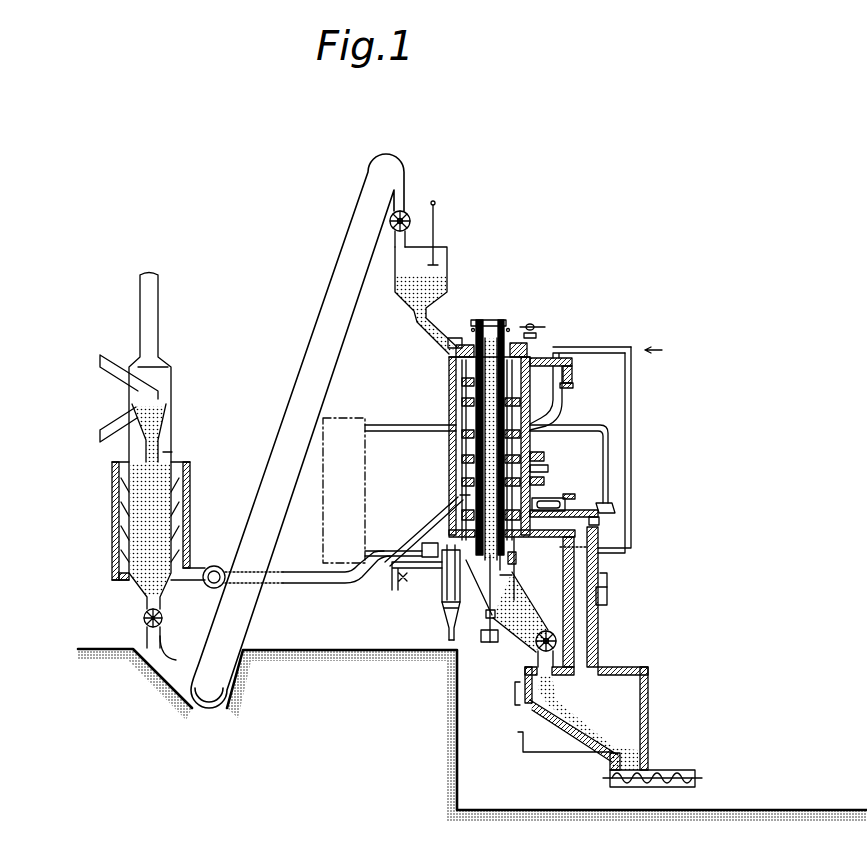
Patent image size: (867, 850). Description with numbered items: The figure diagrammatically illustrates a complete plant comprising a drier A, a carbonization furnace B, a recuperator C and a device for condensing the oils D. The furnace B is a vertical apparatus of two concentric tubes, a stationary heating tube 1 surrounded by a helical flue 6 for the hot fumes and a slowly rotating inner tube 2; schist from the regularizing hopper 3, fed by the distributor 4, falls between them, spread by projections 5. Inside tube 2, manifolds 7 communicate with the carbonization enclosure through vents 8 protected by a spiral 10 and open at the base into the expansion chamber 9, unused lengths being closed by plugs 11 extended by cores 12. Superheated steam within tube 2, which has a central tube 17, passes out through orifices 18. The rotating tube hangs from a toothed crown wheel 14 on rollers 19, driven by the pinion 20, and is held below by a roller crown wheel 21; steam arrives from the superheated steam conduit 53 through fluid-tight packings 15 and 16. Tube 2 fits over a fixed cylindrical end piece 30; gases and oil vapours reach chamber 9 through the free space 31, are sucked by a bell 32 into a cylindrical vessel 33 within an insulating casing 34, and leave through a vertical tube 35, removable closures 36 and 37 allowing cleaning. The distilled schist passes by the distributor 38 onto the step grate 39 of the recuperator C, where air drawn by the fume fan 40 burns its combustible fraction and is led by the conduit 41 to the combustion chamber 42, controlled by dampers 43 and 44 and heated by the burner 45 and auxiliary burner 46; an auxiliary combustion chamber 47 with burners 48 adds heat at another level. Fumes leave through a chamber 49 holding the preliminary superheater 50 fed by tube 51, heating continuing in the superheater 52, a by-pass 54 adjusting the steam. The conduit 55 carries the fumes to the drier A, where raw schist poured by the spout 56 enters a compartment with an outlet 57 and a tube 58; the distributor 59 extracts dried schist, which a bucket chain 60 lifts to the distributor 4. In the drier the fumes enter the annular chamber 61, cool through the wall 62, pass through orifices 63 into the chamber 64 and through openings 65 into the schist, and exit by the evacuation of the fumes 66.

The heating tube 1 is at (462, 416).
The inner tube 2 is at (462, 393).
The regularizing hopper 3 is at (426, 277).
The distributor 4 is at (409, 217).
The projections 5 is at (452, 359).
The helical flue 6 is at (465, 460).
The manifolds 7 is at (465, 481).
The vents 8 is at (465, 440).
The expansion chamber 9 is at (486, 598).
The spiral 10 is at (452, 498).
The plugs 11 is at (476, 321).
The cores 12 is at (486, 437).
The toothed crown wheel 14 is at (503, 321).
The fluid-tight packing 15 is at (487, 617).
The fluid-tight packing 16 is at (488, 643).
The central tube 17 is at (489, 449).
The orifices 18 is at (458, 512).
The rollers 19 is at (532, 339).
The pinion 20 is at (533, 325).
The roller crown wheel 21 is at (514, 550).
The fixed cylindrical end piece 30 is at (500, 601).
The free space 31 is at (510, 565).
The bell 32 is at (508, 578).
The cylindrical vessel 33 is at (441, 600).
The insulating casing 34 is at (446, 612).
The vertical tube 35 is at (440, 578).
The removable closure 36 is at (432, 548).
The removable closure 37 is at (446, 637).
The distributor 38 is at (547, 630).
The step grate 39 is at (576, 734).
The fume fan 40 is at (210, 589).
The conduit 41 is at (599, 635).
The combustion chamber 42 is at (556, 512).
The damper 43 is at (607, 596).
The damper 44 is at (514, 700).
The burner 45 is at (614, 509).
The auxiliary burner 46 is at (600, 525).
The auxiliary combustion chamber 47 is at (545, 457).
The burners 48 is at (549, 469).
The chamber 49 is at (560, 347).
The preliminary superheater 50 is at (553, 382).
The tube 51 is at (644, 340).
The superheater 52 is at (573, 498).
The superheated steam conduit 53 is at (544, 602).
The by-pass 54 is at (628, 460).
The conduit 55 is at (290, 572).
The spout 56 is at (105, 360).
The outlet 57 is at (105, 432).
The tube 58 is at (160, 438).
The distributor 59 is at (176, 651).
The bucket chain 60 is at (297, 431).
The annular chamber 61 is at (125, 580).
The wall 62 is at (131, 592).
The orifices 63 is at (114, 575).
The chamber 64 is at (119, 524).
The openings 65 is at (168, 503).
The evacuation of the fumes 66 is at (176, 452).
The drier A is at (150, 441).
The carbonization furnace B is at (489, 312).
The recuperator C is at (613, 727).
The device for condensing the oils D is at (389, 490).